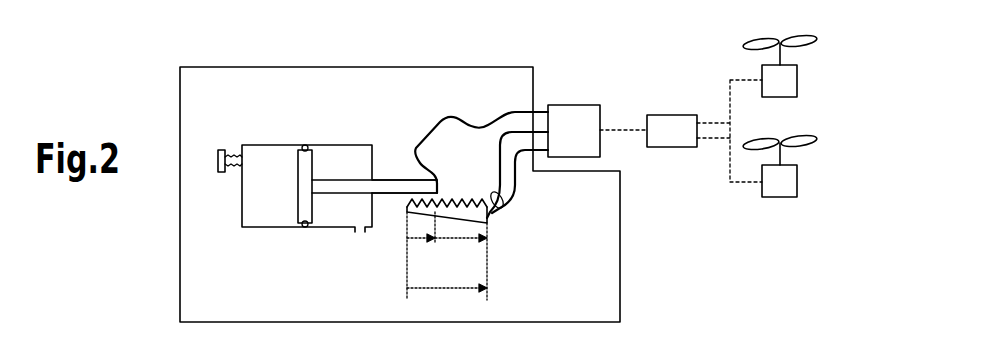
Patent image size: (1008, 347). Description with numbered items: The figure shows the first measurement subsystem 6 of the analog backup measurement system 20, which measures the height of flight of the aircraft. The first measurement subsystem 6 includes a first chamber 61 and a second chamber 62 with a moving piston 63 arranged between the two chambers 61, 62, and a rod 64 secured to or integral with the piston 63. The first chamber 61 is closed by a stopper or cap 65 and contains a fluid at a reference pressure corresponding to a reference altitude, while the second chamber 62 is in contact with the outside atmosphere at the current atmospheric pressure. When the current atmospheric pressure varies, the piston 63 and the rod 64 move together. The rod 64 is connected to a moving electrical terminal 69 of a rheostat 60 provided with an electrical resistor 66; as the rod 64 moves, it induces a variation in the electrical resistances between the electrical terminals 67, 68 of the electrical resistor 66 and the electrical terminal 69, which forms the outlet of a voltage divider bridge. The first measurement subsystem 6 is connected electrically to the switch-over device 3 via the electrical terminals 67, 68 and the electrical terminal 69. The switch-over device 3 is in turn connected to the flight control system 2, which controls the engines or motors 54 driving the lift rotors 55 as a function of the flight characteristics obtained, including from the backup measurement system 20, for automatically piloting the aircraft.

The flight control system 2 is at (662, 122).
The switch-over device 3 is at (568, 117).
The first measurement subsystem 6 is at (257, 245).
The backup measurement system 20 is at (620, 215).
The engines or motors 54 is at (797, 79).
The lift rotors 55 is at (802, 40).
The rheostat 60 is at (512, 232).
The first chamber 61 is at (273, 160).
The second chamber 62 is at (350, 157).
The moving piston 63 is at (312, 205).
The rod 64 is at (398, 178).
The stopper or cap 65 is at (220, 153).
The electrical resistor 66 is at (465, 190).
The electrical terminal 67 is at (513, 198).
The electrical terminal 68 is at (407, 210).
The moving electrical terminal 69 is at (447, 192).